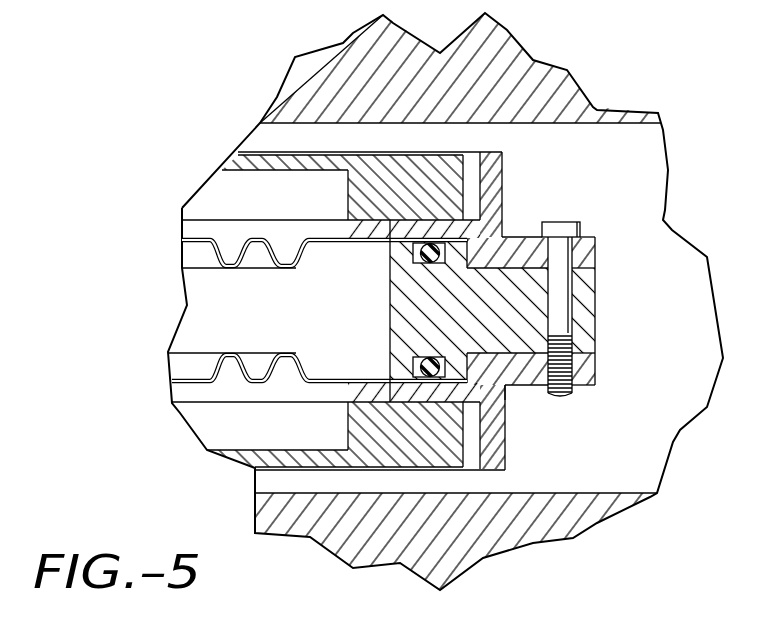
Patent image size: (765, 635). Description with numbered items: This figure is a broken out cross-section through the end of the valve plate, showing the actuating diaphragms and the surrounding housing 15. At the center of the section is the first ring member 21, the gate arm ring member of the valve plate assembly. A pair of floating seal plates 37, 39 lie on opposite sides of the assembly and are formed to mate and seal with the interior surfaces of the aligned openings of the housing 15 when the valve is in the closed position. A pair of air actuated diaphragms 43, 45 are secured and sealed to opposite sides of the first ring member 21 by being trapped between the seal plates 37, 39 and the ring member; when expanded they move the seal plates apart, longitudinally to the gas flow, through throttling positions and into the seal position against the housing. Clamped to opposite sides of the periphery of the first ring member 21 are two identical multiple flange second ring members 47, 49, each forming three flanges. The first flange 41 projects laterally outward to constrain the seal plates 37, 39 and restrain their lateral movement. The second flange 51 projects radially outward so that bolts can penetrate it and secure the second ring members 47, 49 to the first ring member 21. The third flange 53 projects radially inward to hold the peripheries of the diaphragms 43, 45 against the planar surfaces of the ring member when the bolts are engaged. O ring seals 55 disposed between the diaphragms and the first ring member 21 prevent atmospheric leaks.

The housing 15 is at (540, 62).
The first ring member 21 is at (597, 292).
The floating seal plate 37 is at (348, 204).
The floating seal plate 39 is at (348, 430).
The flange 41 is at (503, 167).
The air actuated diaphragm 43 is at (305, 243).
The air actuated diaphragm 45 is at (291, 353).
The second ring member 47 is at (504, 236).
The second ring member 49 is at (508, 388).
The second flange 51 is at (598, 253).
The third flange 53 is at (390, 232).
The O ring seal 55 is at (413, 255).